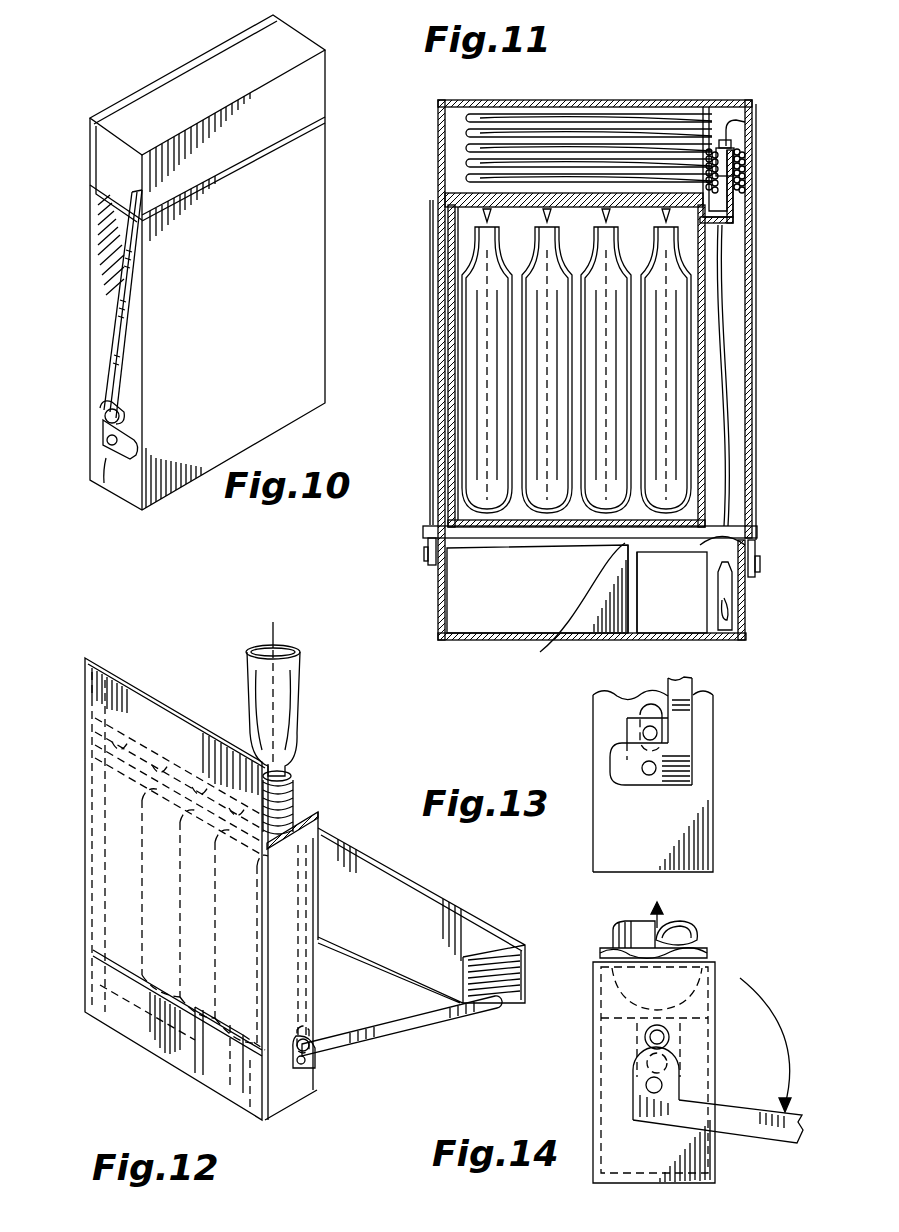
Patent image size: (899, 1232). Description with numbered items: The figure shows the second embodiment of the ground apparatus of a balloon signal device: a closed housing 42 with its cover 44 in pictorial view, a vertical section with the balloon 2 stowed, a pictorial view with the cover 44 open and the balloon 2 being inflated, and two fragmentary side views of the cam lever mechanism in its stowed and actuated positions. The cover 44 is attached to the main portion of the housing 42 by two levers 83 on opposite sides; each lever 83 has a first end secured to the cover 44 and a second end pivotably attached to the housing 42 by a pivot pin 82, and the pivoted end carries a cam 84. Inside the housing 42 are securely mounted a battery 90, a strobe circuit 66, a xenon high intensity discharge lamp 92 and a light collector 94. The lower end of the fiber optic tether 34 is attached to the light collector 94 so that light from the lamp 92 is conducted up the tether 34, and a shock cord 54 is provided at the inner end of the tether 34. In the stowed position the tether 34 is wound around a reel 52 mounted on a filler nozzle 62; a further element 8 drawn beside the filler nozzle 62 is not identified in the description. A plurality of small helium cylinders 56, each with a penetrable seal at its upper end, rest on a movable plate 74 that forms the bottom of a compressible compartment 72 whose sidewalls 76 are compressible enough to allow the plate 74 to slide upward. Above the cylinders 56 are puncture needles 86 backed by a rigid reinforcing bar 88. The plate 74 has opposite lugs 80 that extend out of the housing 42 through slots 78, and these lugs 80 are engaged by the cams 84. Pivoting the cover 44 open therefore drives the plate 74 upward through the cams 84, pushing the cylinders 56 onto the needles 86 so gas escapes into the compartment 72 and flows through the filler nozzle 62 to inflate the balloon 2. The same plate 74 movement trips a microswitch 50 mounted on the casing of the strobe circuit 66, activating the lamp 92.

In FIG. 11, the balloon 2 is at (624, 108).
In FIG. 12, the balloon 2 is at (300, 667).
In FIG. 11, the discharge tube 8 is at (733, 128).
In FIG. 12, the discharge tube 8 is at (292, 770).
In FIG. 11, the fiber optic tether 34 is at (742, 175).
In FIG. 12, the fiber optic tether 34 is at (276, 710).
In FIG. 10, the housing 42 is at (142, 82).
In FIG. 11, the housing 42 is at (438, 602).
In FIG. 12, the housing 42 is at (85, 984).
In FIG. 13, the housing 42 is at (715, 838).
In FIG. 14, the housing 42 is at (595, 1171).
In FIG. 10, the cover 44 is at (314, 97).
In FIG. 11, the cover 44 is at (438, 128).
In FIG. 12, the cover 44 is at (448, 900).
In FIG. 11, the microswitch 50 is at (568, 644).
In FIG. 11, the reel 52 is at (712, 145).
In FIG. 12, the reel 52 is at (298, 820).
In FIG. 11, the shock cord 54 is at (722, 472).
In FIG. 12, the shock cord 54 is at (315, 983).
In FIG. 11, the helium cylinders 56 is at (500, 317).
In FIG. 12, the helium cylinders 56 is at (120, 826).
In FIG. 14, the helium cylinders 56 is at (692, 932).
In FIG. 11, the filler nozzle 62 is at (745, 158).
In FIG. 11, the strobe circuit 66 is at (680, 602).
In FIG. 12, the strobe circuit 66 is at (208, 1096).
In FIG. 11, the compressible compartment 72 is at (458, 232).
In FIG. 12, the compressible compartment 72 is at (118, 763).
In FIG. 11, the movable plate 74 is at (465, 547).
In FIG. 12, the movable plate 74 is at (110, 958).
In FIG. 14, the movable plate 74 is at (718, 978).
In FIG. 11, the sidewalls 76 is at (452, 335).
In FIG. 12, the sidewalls 76 is at (108, 900).
In FIG. 10, the slots 78 is at (122, 405).
In FIG. 11, the slots 78 is at (750, 527).
In FIG. 12, the slots 78 is at (302, 1070).
In FIG. 13, the slots 78 is at (645, 715).
In FIG. 14, the slots 78 is at (640, 1073).
In FIG. 10, the lugs 80 is at (105, 418).
In FIG. 11, the lugs 80 is at (757, 545).
In FIG. 12, the lugs 80 is at (310, 1040).
In FIG. 13, the lugs 80 is at (647, 735).
In FIG. 14, the lugs 80 is at (645, 1035).
In FIG. 10, the pivot pin 82 is at (106, 462).
In FIG. 11, the pivot pin 82 is at (424, 550).
In FIG. 12, the pivot pin 82 is at (306, 1062).
In FIG. 13, the pivot pin 82 is at (650, 778).
In FIG. 14, the pivot pin 82 is at (653, 1096).
In FIG. 10, the levers 83 is at (128, 280).
In FIG. 11, the levers 83 is at (430, 405).
In FIG. 12, the levers 83 is at (423, 1027).
In FIG. 13, the levers 83 is at (683, 718).
In FIG. 14, the levers 83 is at (778, 1130).
In FIG. 10, the cam 84 is at (137, 445).
In FIG. 11, the cam 84 is at (758, 574).
In FIG. 12, the cam 84 is at (318, 1042).
In FIG. 13, the cam 84 is at (612, 748).
In FIG. 14, the cam 84 is at (682, 1045).
In FIG. 11, the puncture needles 86 is at (525, 218).
In FIG. 12, the puncture needles 86 is at (106, 720).
In FIG. 11, the reinforcing bar 88 is at (450, 187).
In FIG. 12, the reinforcing bar 88 is at (148, 718).
In FIG. 11, the battery 90 is at (537, 600).
In FIG. 12, the battery 90 is at (115, 1030).
In FIG. 11, the xenon high intensity discharge lamp 92 is at (730, 612).
In FIG. 11, the light collector 94 is at (712, 585).
In FIG. 12, the light collector 94 is at (240, 1110).